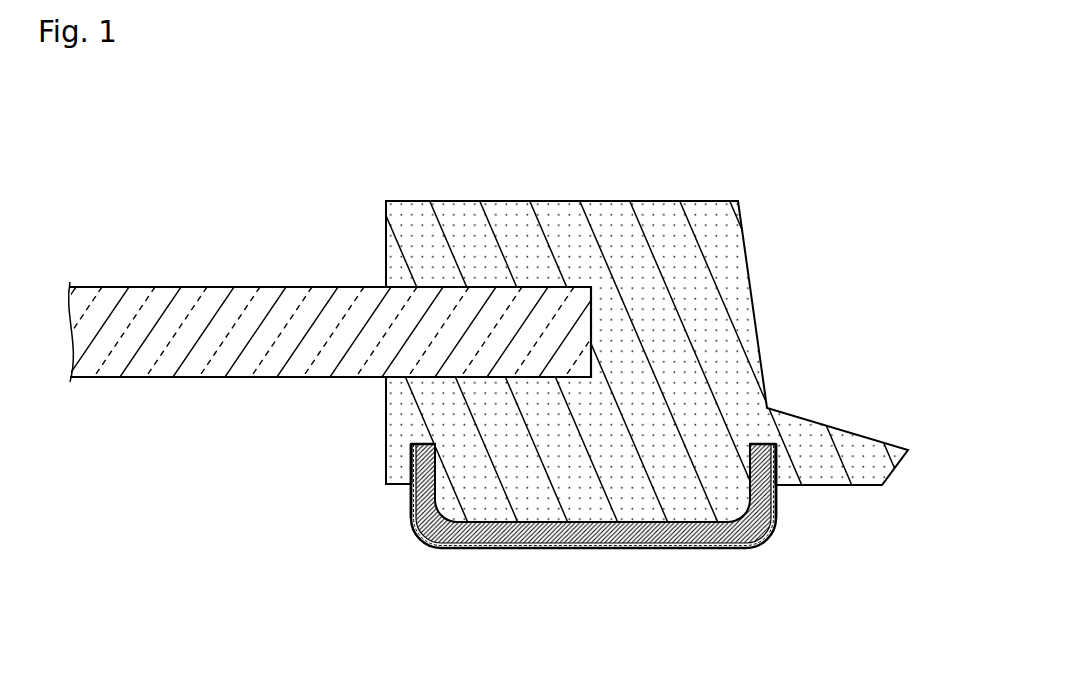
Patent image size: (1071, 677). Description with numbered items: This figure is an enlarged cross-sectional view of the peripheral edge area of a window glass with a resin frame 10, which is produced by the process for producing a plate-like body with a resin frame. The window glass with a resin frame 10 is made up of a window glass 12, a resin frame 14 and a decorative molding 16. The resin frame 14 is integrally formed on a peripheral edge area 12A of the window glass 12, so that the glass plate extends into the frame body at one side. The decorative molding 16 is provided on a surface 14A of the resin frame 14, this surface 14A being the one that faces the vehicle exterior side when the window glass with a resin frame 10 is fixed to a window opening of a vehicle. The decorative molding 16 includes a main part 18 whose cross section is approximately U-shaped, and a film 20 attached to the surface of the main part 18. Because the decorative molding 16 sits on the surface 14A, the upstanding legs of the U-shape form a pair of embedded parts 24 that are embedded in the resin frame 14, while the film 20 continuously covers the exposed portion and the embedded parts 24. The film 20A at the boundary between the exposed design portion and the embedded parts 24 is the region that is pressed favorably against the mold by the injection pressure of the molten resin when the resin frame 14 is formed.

The window glass with a resin frame 10 is at (474, 355).
The window glass 12 is at (220, 287).
The peripheral edge area 12A is at (535, 297).
The resin frame 14 is at (556, 202).
The surface of the resin frame 14A is at (702, 523).
The decorative molding 16 is at (577, 535).
The main part 18 is at (603, 537).
The film 20 is at (493, 546).
The film at the boundary 20A is at (412, 487).
The embedded parts 24 is at (413, 462).